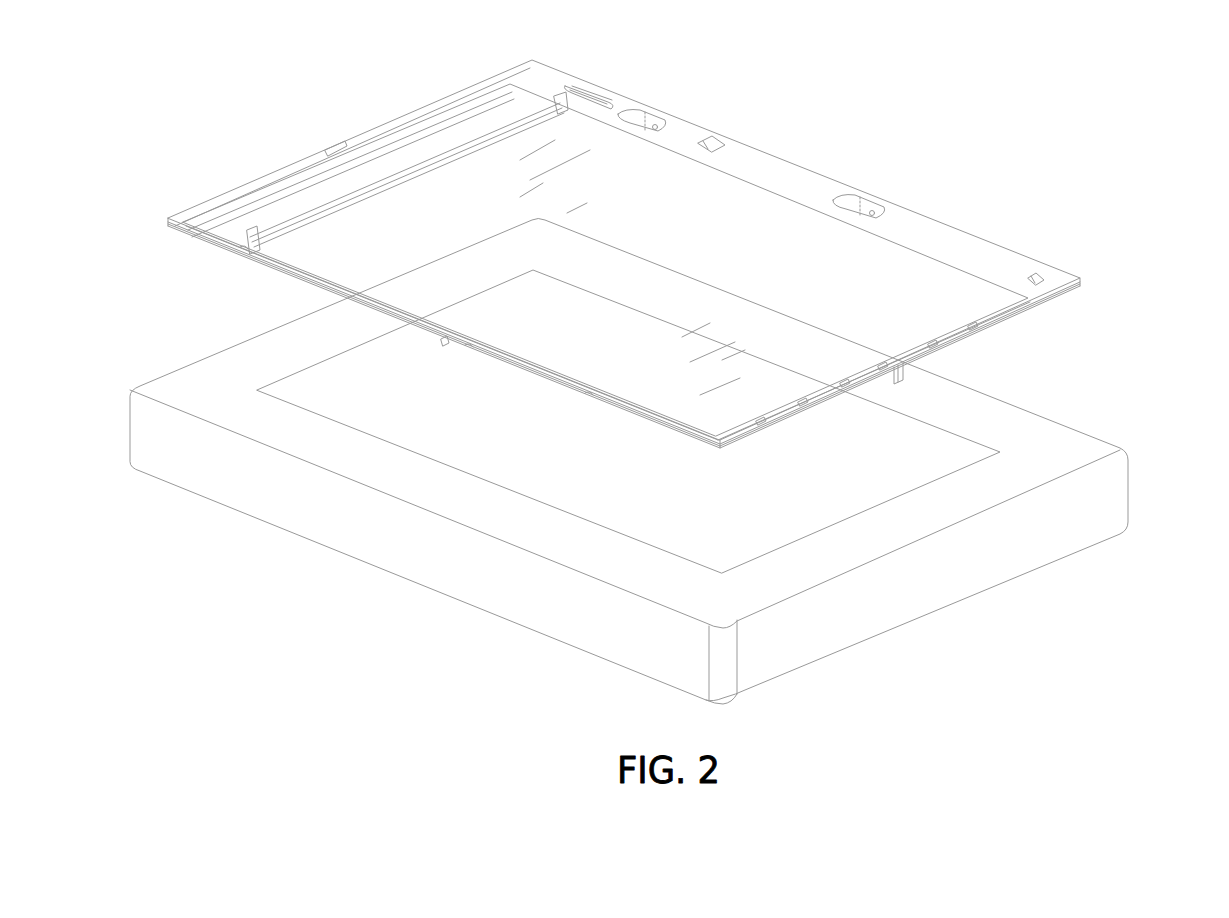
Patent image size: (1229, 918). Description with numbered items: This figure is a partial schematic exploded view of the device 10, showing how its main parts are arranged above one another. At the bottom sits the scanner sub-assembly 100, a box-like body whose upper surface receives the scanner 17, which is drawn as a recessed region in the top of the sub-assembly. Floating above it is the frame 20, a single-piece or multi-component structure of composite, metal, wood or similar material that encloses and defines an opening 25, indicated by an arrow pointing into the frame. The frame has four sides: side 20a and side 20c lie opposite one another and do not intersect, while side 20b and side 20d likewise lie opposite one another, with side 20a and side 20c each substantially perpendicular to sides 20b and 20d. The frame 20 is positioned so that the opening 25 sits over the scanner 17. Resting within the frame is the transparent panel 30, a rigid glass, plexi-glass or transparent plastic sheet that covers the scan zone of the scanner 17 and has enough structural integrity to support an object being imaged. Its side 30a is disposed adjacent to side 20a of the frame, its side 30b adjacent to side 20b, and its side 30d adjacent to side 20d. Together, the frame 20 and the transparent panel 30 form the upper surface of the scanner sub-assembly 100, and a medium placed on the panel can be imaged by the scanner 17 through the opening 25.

The device 10 is at (956, 113).
The scanner 17 is at (975, 437).
The frame 20 is at (745, 158).
The side 20a is at (565, 386).
The side 20b is at (1030, 316).
The side 20c is at (930, 218).
The side 20d is at (352, 133).
The opening 25 is at (635, 158).
The transparent panel 30 is at (490, 168).
The side 30a is at (500, 352).
The side 30b is at (940, 354).
The side 30d is at (264, 178).
The scanner sub-assembly 100 is at (1128, 491).